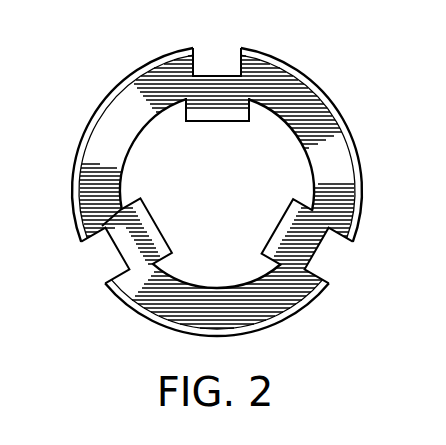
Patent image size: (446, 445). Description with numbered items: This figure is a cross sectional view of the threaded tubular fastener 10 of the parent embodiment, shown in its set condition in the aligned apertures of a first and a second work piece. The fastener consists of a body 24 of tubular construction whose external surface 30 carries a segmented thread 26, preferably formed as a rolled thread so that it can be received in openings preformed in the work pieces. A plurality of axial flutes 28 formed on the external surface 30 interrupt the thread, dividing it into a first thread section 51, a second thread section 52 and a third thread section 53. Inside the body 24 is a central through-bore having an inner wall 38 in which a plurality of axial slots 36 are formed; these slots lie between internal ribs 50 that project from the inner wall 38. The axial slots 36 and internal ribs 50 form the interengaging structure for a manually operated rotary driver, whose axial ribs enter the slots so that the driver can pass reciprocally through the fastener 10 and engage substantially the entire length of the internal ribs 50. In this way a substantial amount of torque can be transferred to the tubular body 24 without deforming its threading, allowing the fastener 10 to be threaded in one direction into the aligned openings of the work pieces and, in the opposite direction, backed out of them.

The tubular fastener 10 is at (290, 55).
The body 24 is at (302, 107).
The segmented thread 26 is at (72, 167).
The axial flutes 28 is at (238, 73).
The external surface 30 is at (90, 128).
The axial slots 36 is at (286, 162).
The inner wall 38 is at (263, 279).
The internal ribs 50 is at (207, 113).
The first thread section 51 is at (363, 173).
The second thread section 52 is at (163, 325).
The third thread section 53 is at (103, 93).